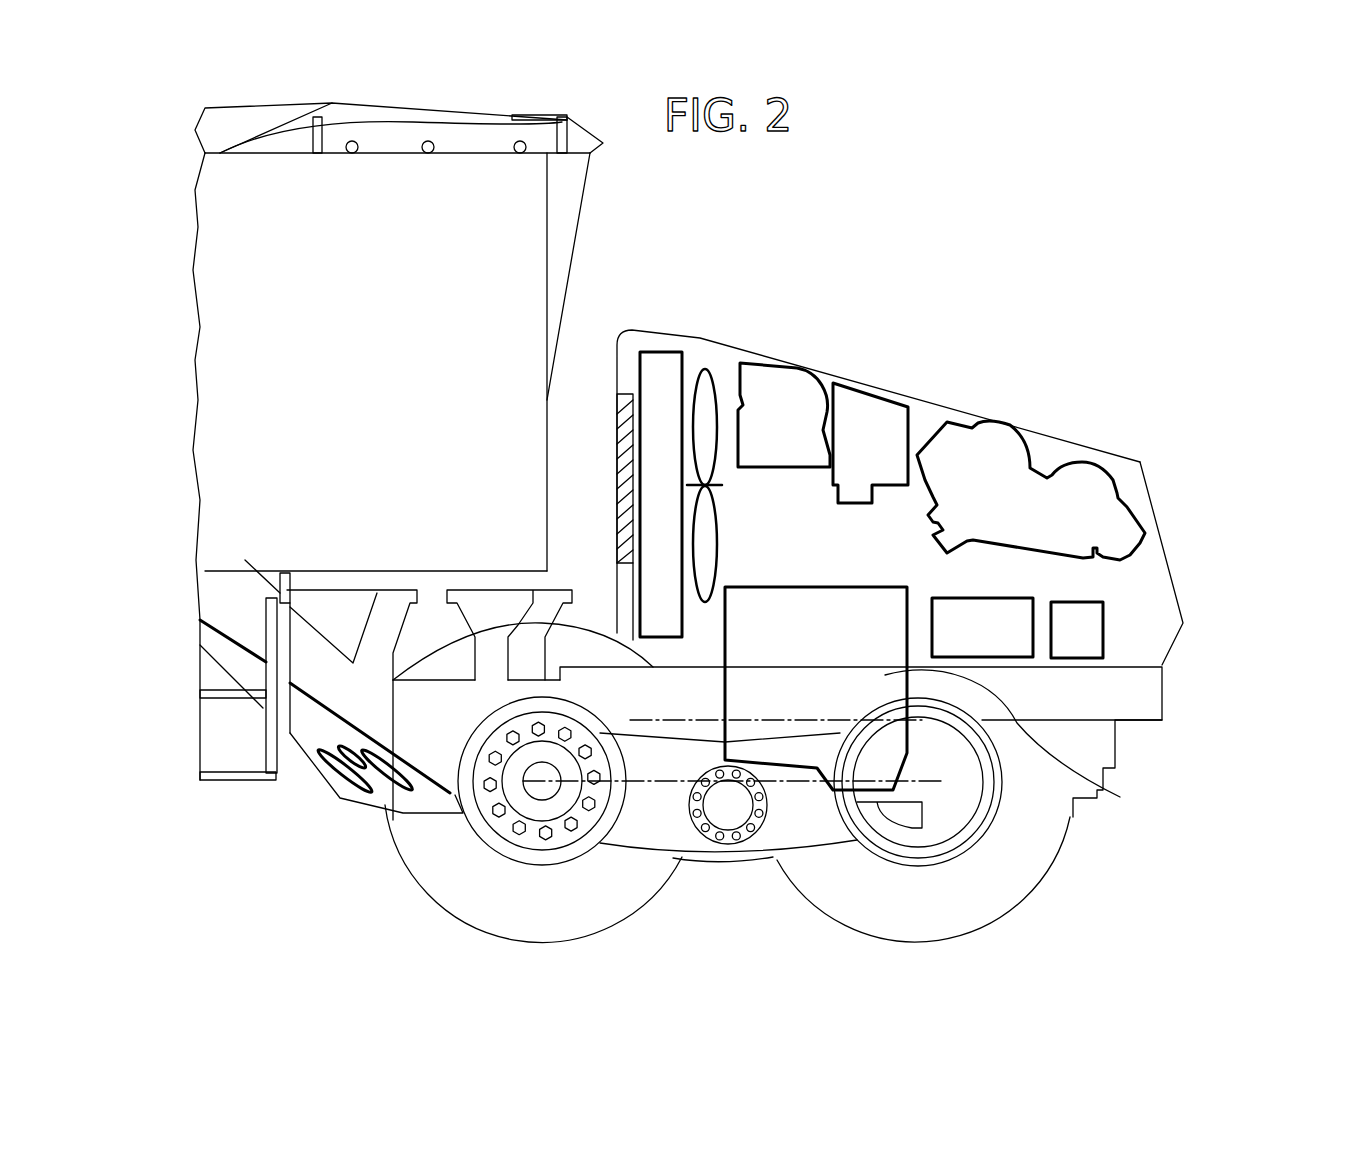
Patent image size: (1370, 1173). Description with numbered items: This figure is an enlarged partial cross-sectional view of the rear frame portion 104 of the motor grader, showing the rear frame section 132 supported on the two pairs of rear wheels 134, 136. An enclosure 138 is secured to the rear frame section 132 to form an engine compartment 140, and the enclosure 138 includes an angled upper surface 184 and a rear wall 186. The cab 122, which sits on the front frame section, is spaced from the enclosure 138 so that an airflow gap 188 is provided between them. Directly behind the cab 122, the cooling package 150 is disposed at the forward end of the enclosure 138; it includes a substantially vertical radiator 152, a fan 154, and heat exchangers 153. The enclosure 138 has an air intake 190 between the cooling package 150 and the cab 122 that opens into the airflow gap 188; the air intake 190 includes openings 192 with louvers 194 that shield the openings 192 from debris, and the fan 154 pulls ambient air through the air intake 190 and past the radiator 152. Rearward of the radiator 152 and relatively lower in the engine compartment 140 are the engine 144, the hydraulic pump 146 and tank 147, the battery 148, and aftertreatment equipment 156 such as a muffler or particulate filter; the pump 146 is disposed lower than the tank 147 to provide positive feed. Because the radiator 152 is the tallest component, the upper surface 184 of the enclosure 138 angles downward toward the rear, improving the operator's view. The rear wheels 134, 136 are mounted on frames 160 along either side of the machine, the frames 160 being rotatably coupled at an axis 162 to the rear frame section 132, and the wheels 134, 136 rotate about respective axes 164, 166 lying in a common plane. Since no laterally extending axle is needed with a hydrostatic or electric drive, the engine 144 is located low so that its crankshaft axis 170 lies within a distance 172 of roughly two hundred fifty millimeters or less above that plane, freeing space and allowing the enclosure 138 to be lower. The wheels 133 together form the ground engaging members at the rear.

The rear frame portion 104 is at (1147, 310).
The cab 122 is at (428, 112).
The rear frame section 132 is at (1152, 693).
The wheels 133 is at (811, 910).
The rear wheels 134 is at (490, 928).
The rear wheels 136 is at (993, 923).
The enclosure 138 is at (867, 381).
The engine compartment 140 is at (877, 537).
The engine 144 is at (1025, 743).
The pump 146 is at (1003, 642).
The tank 147 is at (903, 427).
The battery 148 is at (1080, 635).
The cooling package 150 is at (654, 320).
The radiator 152 is at (667, 350).
The heat exchangers 153 is at (777, 387).
The fan 154 is at (703, 367).
The aftertreatment equipment 156 is at (1083, 505).
The frames 160 is at (752, 862).
The axis 162 is at (728, 805).
The axis 164 is at (537, 787).
The axis 166 is at (918, 782).
The crankshaft axis 170 is at (841, 713).
The distance 172 is at (806, 672).
The upper surface 184 is at (830, 383).
The rear wall 186 is at (1163, 548).
The airflow gap 188 is at (585, 367).
The air intake 190 is at (620, 397).
The openings 192 is at (621, 438).
The louvers 194 is at (622, 507).